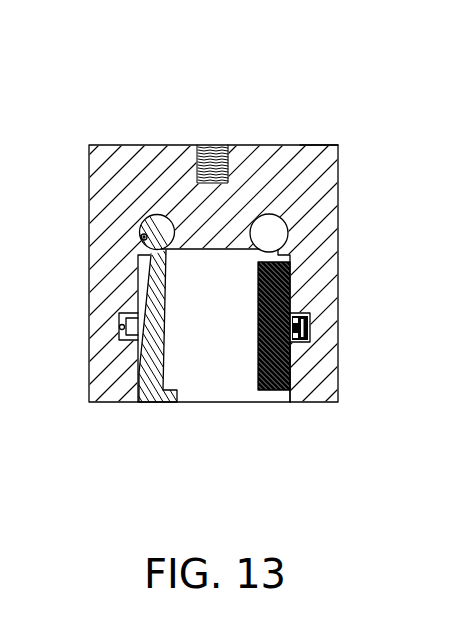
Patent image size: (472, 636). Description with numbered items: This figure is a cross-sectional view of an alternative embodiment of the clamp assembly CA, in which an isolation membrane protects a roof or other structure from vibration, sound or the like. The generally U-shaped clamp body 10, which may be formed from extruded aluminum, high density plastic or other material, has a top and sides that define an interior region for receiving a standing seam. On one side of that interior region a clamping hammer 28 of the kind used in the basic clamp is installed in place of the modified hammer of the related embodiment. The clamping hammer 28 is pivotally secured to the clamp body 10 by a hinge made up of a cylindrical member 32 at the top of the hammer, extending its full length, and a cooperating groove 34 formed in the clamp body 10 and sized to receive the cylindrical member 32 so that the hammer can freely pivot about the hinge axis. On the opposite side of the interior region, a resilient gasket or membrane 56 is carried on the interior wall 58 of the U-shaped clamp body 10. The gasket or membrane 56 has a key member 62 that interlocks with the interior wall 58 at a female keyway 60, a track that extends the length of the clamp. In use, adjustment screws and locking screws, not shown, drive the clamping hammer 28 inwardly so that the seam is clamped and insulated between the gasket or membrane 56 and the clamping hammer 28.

The clamp body 10 is at (338, 196).
The clamp assembly CA is at (322, 142).
The clamping hammer 28 is at (155, 403).
The cylindrical member 32 is at (158, 216).
The groove 34 is at (141, 238).
The gasket or membrane 56 is at (259, 393).
The interior wall 58 is at (290, 399).
The keyway track 60 is at (121, 329).
The key member 62 is at (300, 318).